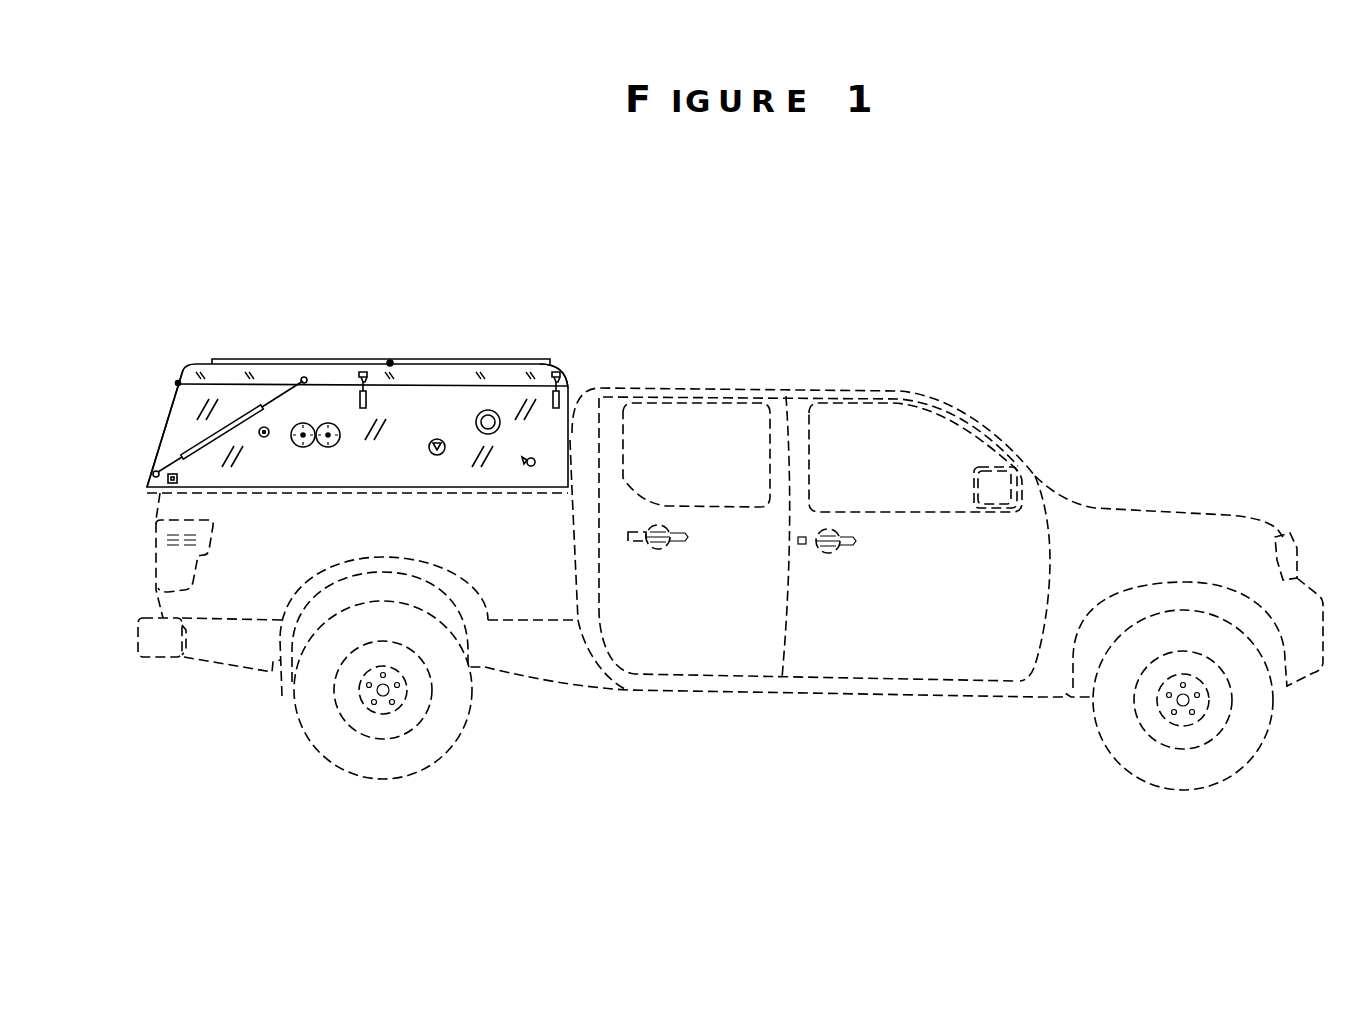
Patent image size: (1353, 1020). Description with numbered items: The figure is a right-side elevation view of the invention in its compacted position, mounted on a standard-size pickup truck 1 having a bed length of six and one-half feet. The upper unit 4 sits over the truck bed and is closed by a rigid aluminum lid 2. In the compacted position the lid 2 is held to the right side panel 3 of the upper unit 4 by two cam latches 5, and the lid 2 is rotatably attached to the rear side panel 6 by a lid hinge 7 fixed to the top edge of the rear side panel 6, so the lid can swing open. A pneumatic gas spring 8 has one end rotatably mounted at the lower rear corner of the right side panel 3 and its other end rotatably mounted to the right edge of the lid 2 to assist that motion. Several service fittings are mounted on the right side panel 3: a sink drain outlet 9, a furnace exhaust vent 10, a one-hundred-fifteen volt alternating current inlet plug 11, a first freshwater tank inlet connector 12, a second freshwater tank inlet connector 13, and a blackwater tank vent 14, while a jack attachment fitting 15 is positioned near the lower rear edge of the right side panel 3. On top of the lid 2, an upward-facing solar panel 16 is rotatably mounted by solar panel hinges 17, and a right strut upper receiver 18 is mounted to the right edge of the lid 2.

The pickup truck 1 is at (1113, 537).
The lid 2 is at (500, 372).
The right side panel 3 is at (183, 412).
The upper unit 4 is at (561, 357).
The cam latch 5 is at (358, 376).
The rear side panel 6 is at (163, 430).
The lid hinge 7 is at (178, 383).
The pneumatic gas spring 8 is at (180, 445).
The sink drain outlet 9 is at (537, 462).
The furnace exhaust vent 10 is at (488, 410).
The 115 VAC voltage inlet plug 11 is at (437, 439).
The first tank water inlet connector 12 is at (329, 423).
The second tank water inlet connector 13 is at (303, 423).
The blackwater tank vent 14 is at (263, 442).
The jack attachment fitting 15 is at (165, 485).
The solar panel 16 is at (223, 362).
The solar panel hinge 17 is at (522, 368).
The right strut upper receiver 18 is at (390, 363).